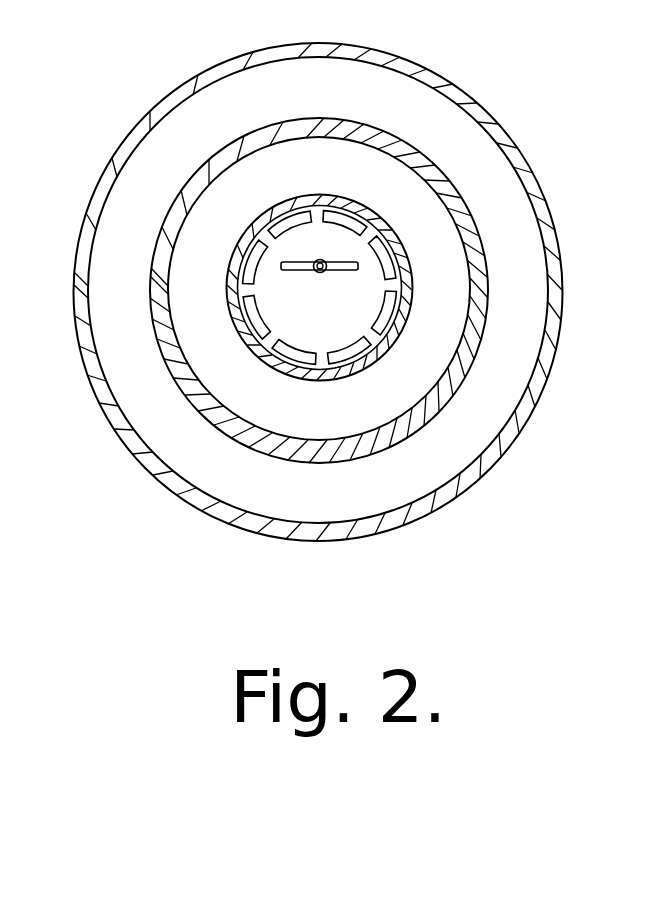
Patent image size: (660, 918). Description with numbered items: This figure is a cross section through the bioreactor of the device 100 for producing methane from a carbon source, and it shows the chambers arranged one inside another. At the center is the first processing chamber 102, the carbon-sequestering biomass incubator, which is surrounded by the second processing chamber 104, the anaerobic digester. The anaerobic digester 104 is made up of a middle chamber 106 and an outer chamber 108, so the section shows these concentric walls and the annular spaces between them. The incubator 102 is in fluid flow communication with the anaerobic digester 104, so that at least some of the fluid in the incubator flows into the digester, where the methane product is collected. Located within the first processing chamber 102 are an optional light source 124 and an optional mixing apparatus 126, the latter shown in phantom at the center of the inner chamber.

The multi-lumen catheter assembly 100 is at (356, 292).
The first processing chamber 102 is at (328, 323).
The second processing chamber 104 is at (328, 424).
The middle chamber 106 is at (448, 371).
The outer chamber 108 is at (523, 413).
The light source 124 is at (376, 313).
The mixing apparatus 126 is at (320, 259).